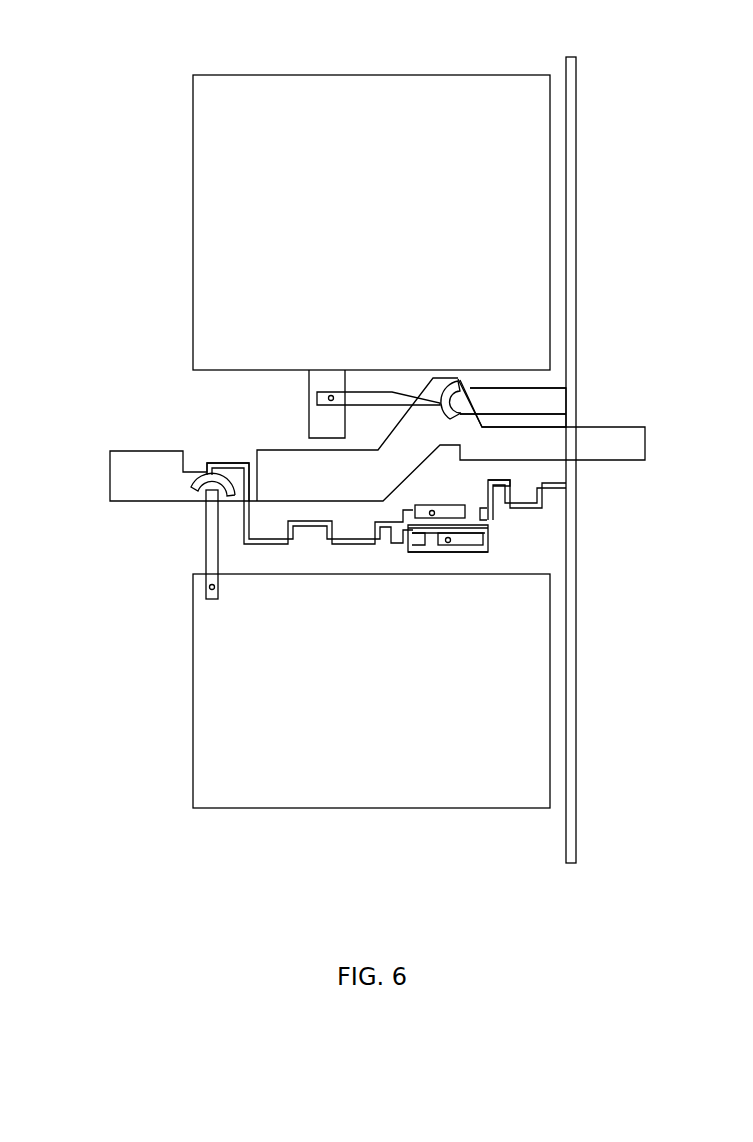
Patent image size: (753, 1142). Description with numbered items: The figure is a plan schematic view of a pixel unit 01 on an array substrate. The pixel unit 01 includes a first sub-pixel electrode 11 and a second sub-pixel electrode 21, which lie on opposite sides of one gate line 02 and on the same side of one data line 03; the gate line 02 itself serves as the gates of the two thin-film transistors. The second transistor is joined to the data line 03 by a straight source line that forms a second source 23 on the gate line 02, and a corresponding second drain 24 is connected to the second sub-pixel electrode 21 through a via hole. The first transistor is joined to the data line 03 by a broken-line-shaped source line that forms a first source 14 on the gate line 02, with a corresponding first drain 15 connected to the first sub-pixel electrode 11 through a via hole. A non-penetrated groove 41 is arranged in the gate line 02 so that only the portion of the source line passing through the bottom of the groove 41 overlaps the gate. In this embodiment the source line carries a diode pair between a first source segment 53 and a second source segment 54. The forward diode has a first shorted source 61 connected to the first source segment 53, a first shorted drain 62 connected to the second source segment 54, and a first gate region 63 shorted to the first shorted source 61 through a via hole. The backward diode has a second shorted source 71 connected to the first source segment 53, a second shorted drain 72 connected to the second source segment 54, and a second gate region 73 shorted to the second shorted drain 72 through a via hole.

The pixel unit 01 is at (76, 58).
The gate line 02 is at (110, 465).
The data line 03 is at (577, 56).
The first sub-pixel electrode 11 is at (300, 808).
The second sub-pixel electrode 21 is at (300, 74).
The second source 23 is at (472, 392).
The second drain 24 is at (452, 392).
The first source 14 is at (192, 485).
The first drain 15 is at (208, 493).
The groove 41 is at (243, 486).
The first source segment 53 is at (283, 544).
The second source segment 54 is at (522, 508).
The first shorted source 61 is at (493, 483).
The first shorted drain 62 is at (480, 505).
The first gate region 63 is at (430, 505).
The second shorted source 71 is at (413, 540).
The second shorted drain 72 is at (455, 541).
The second gate region 73 is at (470, 552).